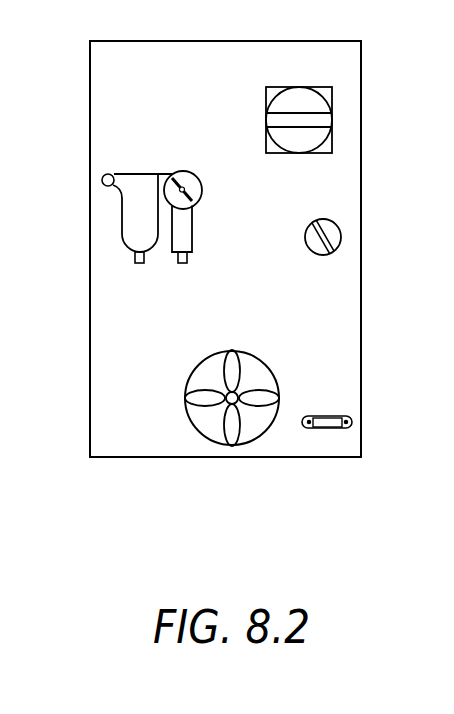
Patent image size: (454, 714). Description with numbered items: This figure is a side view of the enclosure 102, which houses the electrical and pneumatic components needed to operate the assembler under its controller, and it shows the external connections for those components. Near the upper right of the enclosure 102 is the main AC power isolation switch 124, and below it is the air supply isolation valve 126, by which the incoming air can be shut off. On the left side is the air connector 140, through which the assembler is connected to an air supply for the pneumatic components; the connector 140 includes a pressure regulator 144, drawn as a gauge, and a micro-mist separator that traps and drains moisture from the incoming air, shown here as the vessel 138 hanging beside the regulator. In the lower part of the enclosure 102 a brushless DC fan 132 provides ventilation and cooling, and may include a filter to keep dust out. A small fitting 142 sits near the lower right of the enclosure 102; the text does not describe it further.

The enclosure 102 is at (340, 331).
The main AC power isolation switch 124 is at (331, 86).
The air supply isolation valve 126 is at (340, 226).
The fan 132 is at (257, 441).
The reservoir / filter vessel 138 is at (122, 239).
The air connector 140 is at (103, 176).
The connector / terminal 142 is at (347, 429).
The pressure regulator 144 is at (181, 172).